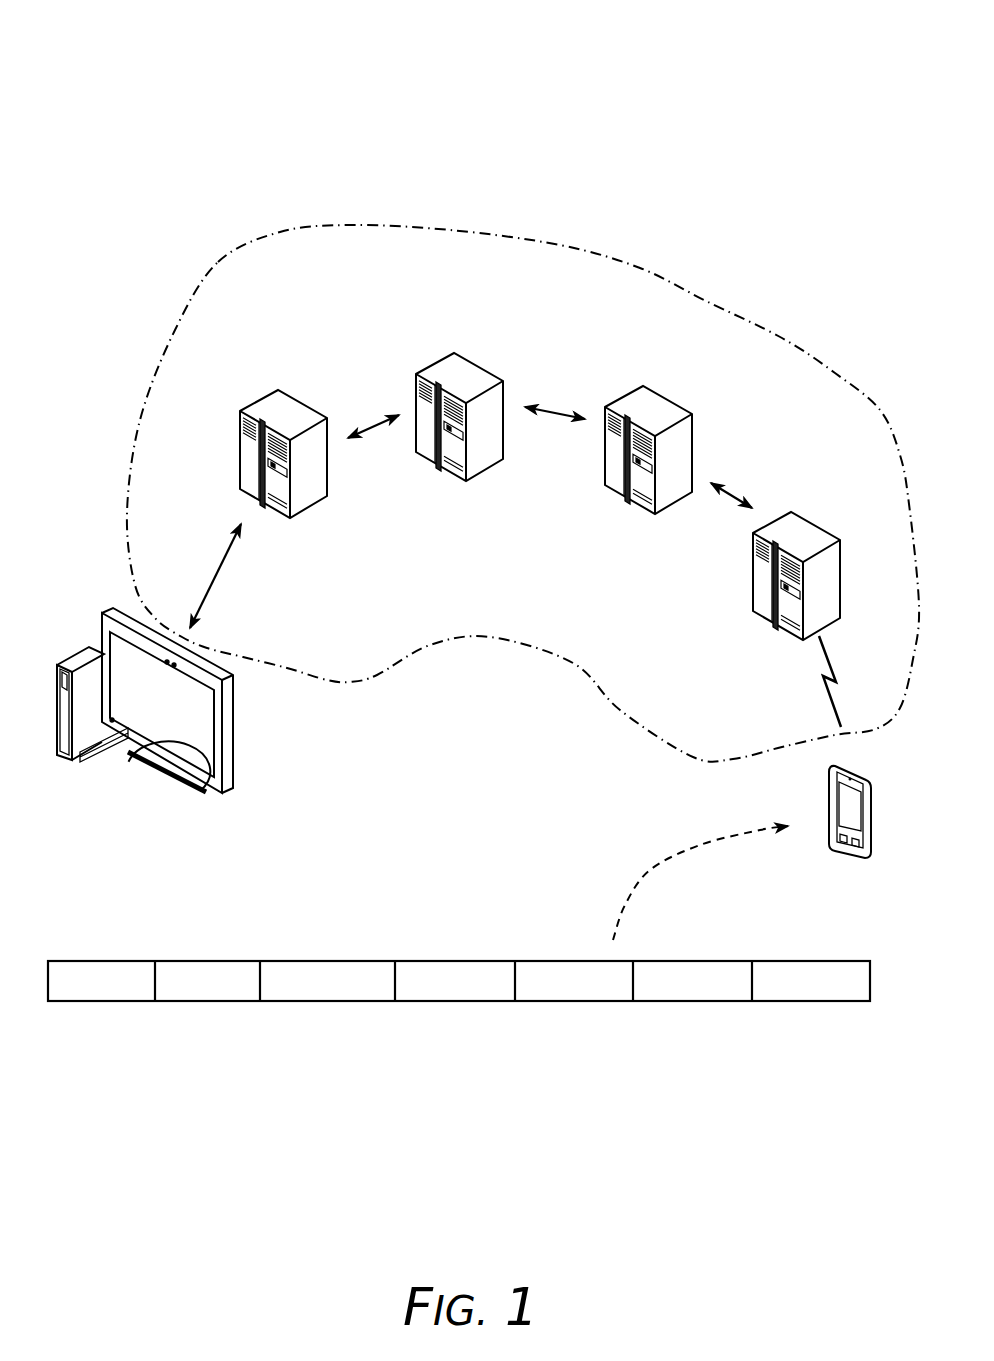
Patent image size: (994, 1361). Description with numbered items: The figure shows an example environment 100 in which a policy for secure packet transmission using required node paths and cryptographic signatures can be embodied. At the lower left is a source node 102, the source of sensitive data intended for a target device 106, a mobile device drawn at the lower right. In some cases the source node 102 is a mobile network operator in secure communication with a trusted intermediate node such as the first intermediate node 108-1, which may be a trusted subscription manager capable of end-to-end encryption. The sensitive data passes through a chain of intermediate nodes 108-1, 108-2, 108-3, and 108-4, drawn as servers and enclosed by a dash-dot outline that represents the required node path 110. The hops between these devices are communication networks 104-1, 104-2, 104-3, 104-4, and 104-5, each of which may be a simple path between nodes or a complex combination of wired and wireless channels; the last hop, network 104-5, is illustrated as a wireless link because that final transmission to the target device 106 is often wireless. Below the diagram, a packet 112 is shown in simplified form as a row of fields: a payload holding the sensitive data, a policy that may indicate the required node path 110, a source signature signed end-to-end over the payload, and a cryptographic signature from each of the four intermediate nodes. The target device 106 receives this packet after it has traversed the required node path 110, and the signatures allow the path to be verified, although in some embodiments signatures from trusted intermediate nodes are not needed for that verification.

The environment 100 is at (767, 60).
The source node 102 is at (145, 713).
The communication network 104-1 is at (220, 590).
The communication network 104-2 is at (373, 437).
The communication network 104-3 is at (550, 422).
The communication network 104-4 is at (725, 505).
The wireless network 104-5 is at (818, 695).
The target device 106 is at (850, 828).
The intermediate node 108-1 is at (258, 441).
The intermediate node 108-2 is at (437, 407).
The intermediate node 108-3 is at (662, 441).
The intermediate node 108-4 is at (812, 565).
The required node path 110 is at (218, 262).
The packet 112 is at (258, 1052).